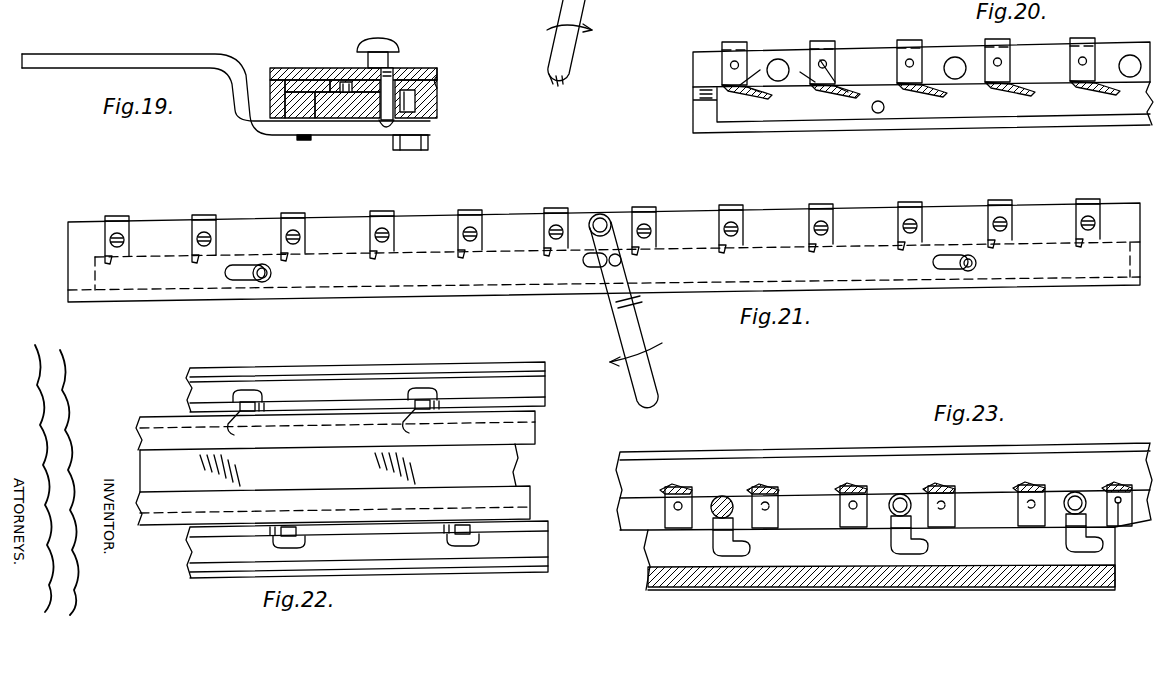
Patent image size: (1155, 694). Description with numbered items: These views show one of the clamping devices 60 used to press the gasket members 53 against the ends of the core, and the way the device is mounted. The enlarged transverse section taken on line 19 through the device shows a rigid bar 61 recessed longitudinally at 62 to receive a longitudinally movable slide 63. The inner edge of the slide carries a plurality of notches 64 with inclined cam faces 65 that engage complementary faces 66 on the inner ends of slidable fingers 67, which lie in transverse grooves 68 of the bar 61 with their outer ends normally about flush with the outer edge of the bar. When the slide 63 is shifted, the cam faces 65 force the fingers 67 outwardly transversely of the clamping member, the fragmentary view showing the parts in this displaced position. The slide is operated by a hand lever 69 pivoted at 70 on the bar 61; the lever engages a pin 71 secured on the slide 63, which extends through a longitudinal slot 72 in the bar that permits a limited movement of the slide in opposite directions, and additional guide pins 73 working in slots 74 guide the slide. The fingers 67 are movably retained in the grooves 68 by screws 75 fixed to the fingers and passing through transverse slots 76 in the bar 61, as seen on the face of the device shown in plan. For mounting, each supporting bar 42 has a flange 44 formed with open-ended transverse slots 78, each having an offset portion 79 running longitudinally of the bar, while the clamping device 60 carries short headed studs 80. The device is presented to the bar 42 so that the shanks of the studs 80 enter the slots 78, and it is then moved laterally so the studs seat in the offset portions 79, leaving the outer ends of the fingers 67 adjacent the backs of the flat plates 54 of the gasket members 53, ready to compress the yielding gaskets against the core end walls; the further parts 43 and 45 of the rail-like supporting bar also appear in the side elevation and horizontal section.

In FIG. 20, the section line 19 is at (628, 0).
In FIG. 22, the supporting bar 42 is at (367, 467).
In FIG. 23, the supporting bar 42 is at (694, 605).
In FIG. 22, the rail flange 43 is at (462, 396).
In FIG. 23, the rail flange 43 is at (885, 578).
In FIG. 22, the flange 44 is at (535, 518).
In FIG. 23, the flange 44 is at (650, 570).
In FIG. 22, the rail edge 45 is at (530, 364).
In FIG. 22, the gasket member 53 is at (518, 470).
In FIG. 22, the flat plate 54 is at (329, 468).
In FIG. 20, the clamping device 60 is at (944, 25).
In FIG. 21, the clamping device 60 is at (736, 185).
In FIG. 22, the clamping device 60 is at (168, 412).
In FIG. 23, the clamping device 60 is at (1099, 425).
In FIG. 19, the rigid bar 61 is at (437, 104).
In FIG. 20, the rigid bar 61 is at (921, 64).
In FIG. 21, the rigid bar 61 is at (604, 252).
In FIG. 22, the rigid bar 61 is at (335, 468).
In FIG. 23, the rigid bar 61 is at (710, 468).
In FIG. 19, the longitudinal recess 62 is at (272, 80).
In FIG. 20, the longitudinal recess 62 is at (697, 110).
In FIG. 23, the longitudinal recess 62 is at (840, 452).
In FIG. 19, the slide 63 is at (322, 68).
In FIG. 20, the slide 63 is at (934, 108).
In FIG. 21, the slide 63 is at (95, 260).
In FIG. 20, the notch 64 is at (775, 92).
In FIG. 23, the notch 64 is at (920, 492).
In FIG. 19, the inclined cam face 65 is at (356, 90).
In FIG. 20, the inclined cam face 65 is at (858, 96).
In FIG. 20, the complementary face 66 is at (815, 70).
In FIG. 19, the slidable finger 67 is at (415, 68).
In FIG. 20, the slidable finger 67 is at (897, 46).
In FIG. 21, the slidable finger 67 is at (540, 210).
In FIG. 23, the slidable finger 67 is at (780, 494).
In FIG. 19, the transverse groove 68 is at (440, 86).
In FIG. 20, the transverse groove 68 is at (897, 68).
In FIG. 19, the hand lever 69 is at (156, 52).
In FIG. 20, the hand lever 69 is at (575, 60).
In FIG. 21, the hand lever 69 is at (650, 370).
In FIG. 19, the pivot 70 is at (428, 145).
In FIG. 21, the pivot 70 is at (602, 214).
In FIG. 19, the pin 71 is at (300, 140).
In FIG. 21, the pin 71 is at (622, 264).
In FIG. 21, the longitudinal slot 72 is at (580, 262).
In FIG. 20, the guide pin 73 is at (880, 113).
In FIG. 21, the guide pin 73 is at (266, 282).
In FIG. 21, the guide slot 74 is at (232, 278).
In FIG. 19, the screw 75 is at (388, 122).
In FIG. 21, the screw 75 is at (197, 239).
In FIG. 23, the screw 75 is at (1120, 528).
In FIG. 19, the transverse slot 76 is at (415, 110).
In FIG. 21, the transverse slot 76 is at (200, 232).
In FIG. 22, the open-ended transverse slot 78 is at (270, 408).
In FIG. 23, the open-ended transverse slot 78 is at (712, 526).
In FIG. 22, the offset portion 79 is at (405, 427).
In FIG. 23, the offset portion 79 is at (752, 549).
In FIG. 19, the headed stud 80 is at (383, 40).
In FIG. 20, the headed stud 80 is at (1130, 56).
In FIG. 22, the headed stud 80 is at (234, 392).
In FIG. 23, the headed stud 80 is at (725, 500).